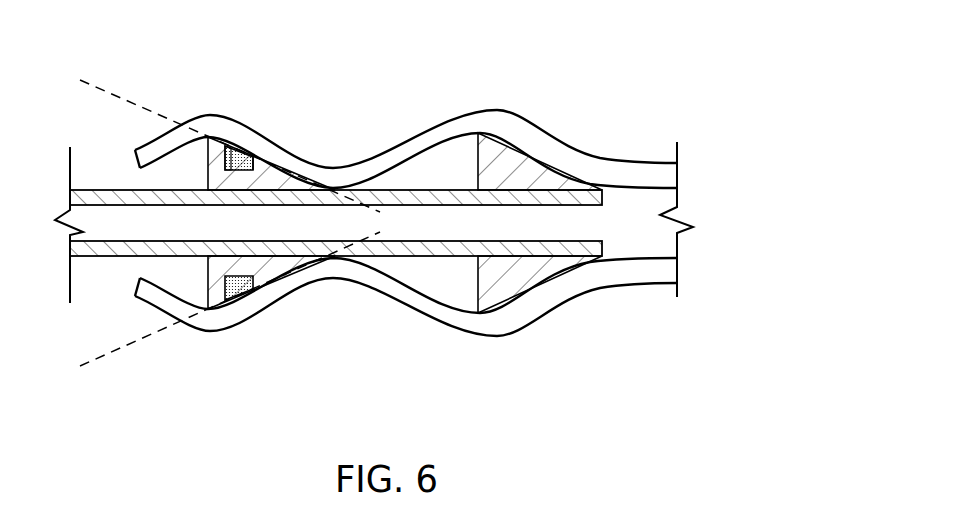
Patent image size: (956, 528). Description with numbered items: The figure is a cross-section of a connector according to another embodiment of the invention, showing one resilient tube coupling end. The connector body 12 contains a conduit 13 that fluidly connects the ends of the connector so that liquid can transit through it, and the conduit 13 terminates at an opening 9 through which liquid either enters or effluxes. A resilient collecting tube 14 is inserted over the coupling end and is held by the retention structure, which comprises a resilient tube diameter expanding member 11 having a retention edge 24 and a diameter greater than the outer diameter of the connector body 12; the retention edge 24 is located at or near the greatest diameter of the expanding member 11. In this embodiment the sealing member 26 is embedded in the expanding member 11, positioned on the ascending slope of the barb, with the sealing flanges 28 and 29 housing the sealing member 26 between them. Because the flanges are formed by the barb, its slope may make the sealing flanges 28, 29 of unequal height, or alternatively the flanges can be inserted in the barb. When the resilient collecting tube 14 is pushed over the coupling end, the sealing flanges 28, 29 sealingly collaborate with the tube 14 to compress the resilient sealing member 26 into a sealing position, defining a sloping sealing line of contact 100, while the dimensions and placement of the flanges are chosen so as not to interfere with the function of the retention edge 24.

The sloping sealing line of contact 100 is at (88, 80).
The opening 9 is at (597, 218).
The resilient tube diameter expanding member 11 is at (217, 173).
The connector body 12 is at (98, 190).
The conduit 13 is at (120, 232).
The resilient collecting tube 14 is at (362, 176).
The retention edge 24 is at (198, 122).
The sealing member 26 is at (252, 155).
The sealing flange 28 is at (227, 148).
The sealing flange 29 is at (250, 160).